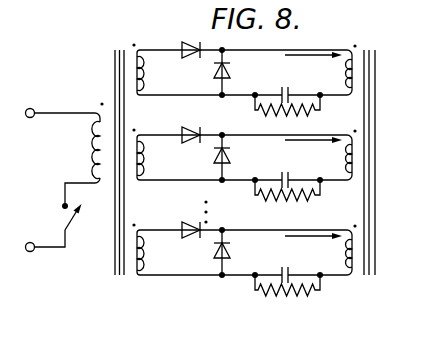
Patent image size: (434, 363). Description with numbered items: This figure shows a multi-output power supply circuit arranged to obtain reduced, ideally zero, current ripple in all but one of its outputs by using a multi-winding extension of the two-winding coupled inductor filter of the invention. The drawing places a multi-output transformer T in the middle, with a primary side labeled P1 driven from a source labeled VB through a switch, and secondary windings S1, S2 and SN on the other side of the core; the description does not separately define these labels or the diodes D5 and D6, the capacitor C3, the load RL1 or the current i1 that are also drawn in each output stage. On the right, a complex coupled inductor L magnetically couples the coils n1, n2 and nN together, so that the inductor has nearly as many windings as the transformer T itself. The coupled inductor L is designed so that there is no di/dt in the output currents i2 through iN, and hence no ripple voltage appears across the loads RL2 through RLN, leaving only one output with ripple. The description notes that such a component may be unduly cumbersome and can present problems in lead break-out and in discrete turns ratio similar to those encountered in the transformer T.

The battery voltage source VB is at (60, 180).
The primary winding P1 is at (92, 157).
The multi-output transformer T is at (117, 177).
The complex coupled inductor L is at (371, 178).
The first secondary winding S1 is at (149, 67).
The second secondary winding S2 is at (149, 161).
The Nth secondary winding SN is at (149, 257).
The rectifier diode D5 is at (183, 44).
The freewheeling diode D6 is at (218, 76).
The capacitor C3 is at (281, 89).
The first load resistor RL1 is at (258, 113).
The second load RL2 is at (258, 198).
The Nth load RLN is at (258, 296).
The first coil of coupled inductor n1 is at (355, 96).
The second coil of coupled inductor n2 is at (355, 181).
The Nth coil of coupled inductor nN is at (355, 277).
The first output current i1 is at (313, 68).
The second output current i2 is at (313, 153).
The Nth output current iN is at (313, 248).